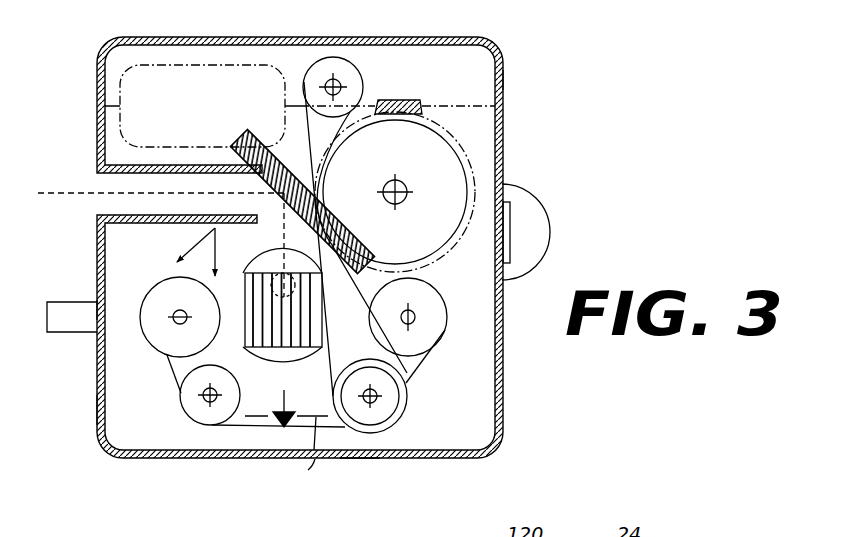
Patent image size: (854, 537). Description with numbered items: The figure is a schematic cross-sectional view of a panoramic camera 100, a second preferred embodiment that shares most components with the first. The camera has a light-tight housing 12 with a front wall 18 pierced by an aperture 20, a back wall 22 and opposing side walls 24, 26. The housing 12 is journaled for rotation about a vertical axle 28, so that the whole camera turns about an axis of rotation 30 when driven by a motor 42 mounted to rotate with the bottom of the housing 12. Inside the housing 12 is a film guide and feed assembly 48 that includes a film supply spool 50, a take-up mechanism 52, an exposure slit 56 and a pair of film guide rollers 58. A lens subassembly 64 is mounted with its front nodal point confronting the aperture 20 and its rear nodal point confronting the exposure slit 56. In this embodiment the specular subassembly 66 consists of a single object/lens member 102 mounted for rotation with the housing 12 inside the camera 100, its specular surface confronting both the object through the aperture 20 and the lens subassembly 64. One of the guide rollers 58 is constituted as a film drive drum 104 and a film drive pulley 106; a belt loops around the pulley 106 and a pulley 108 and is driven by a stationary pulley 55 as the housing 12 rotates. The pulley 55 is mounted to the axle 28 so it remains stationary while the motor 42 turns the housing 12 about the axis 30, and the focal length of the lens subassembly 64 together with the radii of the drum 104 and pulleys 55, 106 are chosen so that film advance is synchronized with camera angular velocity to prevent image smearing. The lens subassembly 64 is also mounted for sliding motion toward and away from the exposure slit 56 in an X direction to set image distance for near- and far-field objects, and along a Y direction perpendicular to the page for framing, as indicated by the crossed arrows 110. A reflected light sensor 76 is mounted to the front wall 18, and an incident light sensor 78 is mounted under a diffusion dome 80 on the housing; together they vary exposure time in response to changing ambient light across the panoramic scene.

The housing 12 is at (498, 42).
The front wall 18 is at (99, 410).
The aperture 20 is at (105, 198).
The back wall 22 is at (505, 77).
The side wall 24 is at (336, 36).
The side wall 26 is at (363, 460).
The vertical axle 28 is at (397, 182).
The axis of rotation 30 is at (405, 202).
The motor 42 is at (168, 66).
The film guide and feed assembly 48 is at (450, 386).
The film supply spool 50 is at (447, 328).
The take-up mechanism 52 is at (157, 350).
The stationary pulley 55 is at (463, 153).
The exposure slit 56 is at (286, 440).
The film guide rollers 58 is at (182, 416).
The lens subassembly 64 is at (298, 336).
The specular subassembly 66 is at (298, 208).
The reflected light sensor 76 is at (63, 333).
The incident light sensor 78 is at (510, 233).
The diffusion dome 80 is at (533, 198).
The panoramic camera 100 is at (110, 473).
The object/lens member 102 is at (233, 147).
The film drive drum 104 is at (370, 364).
The film drive pulley 106 is at (400, 424).
The pulley 108 is at (365, 76).
The crossed arrows 110 is at (217, 228).